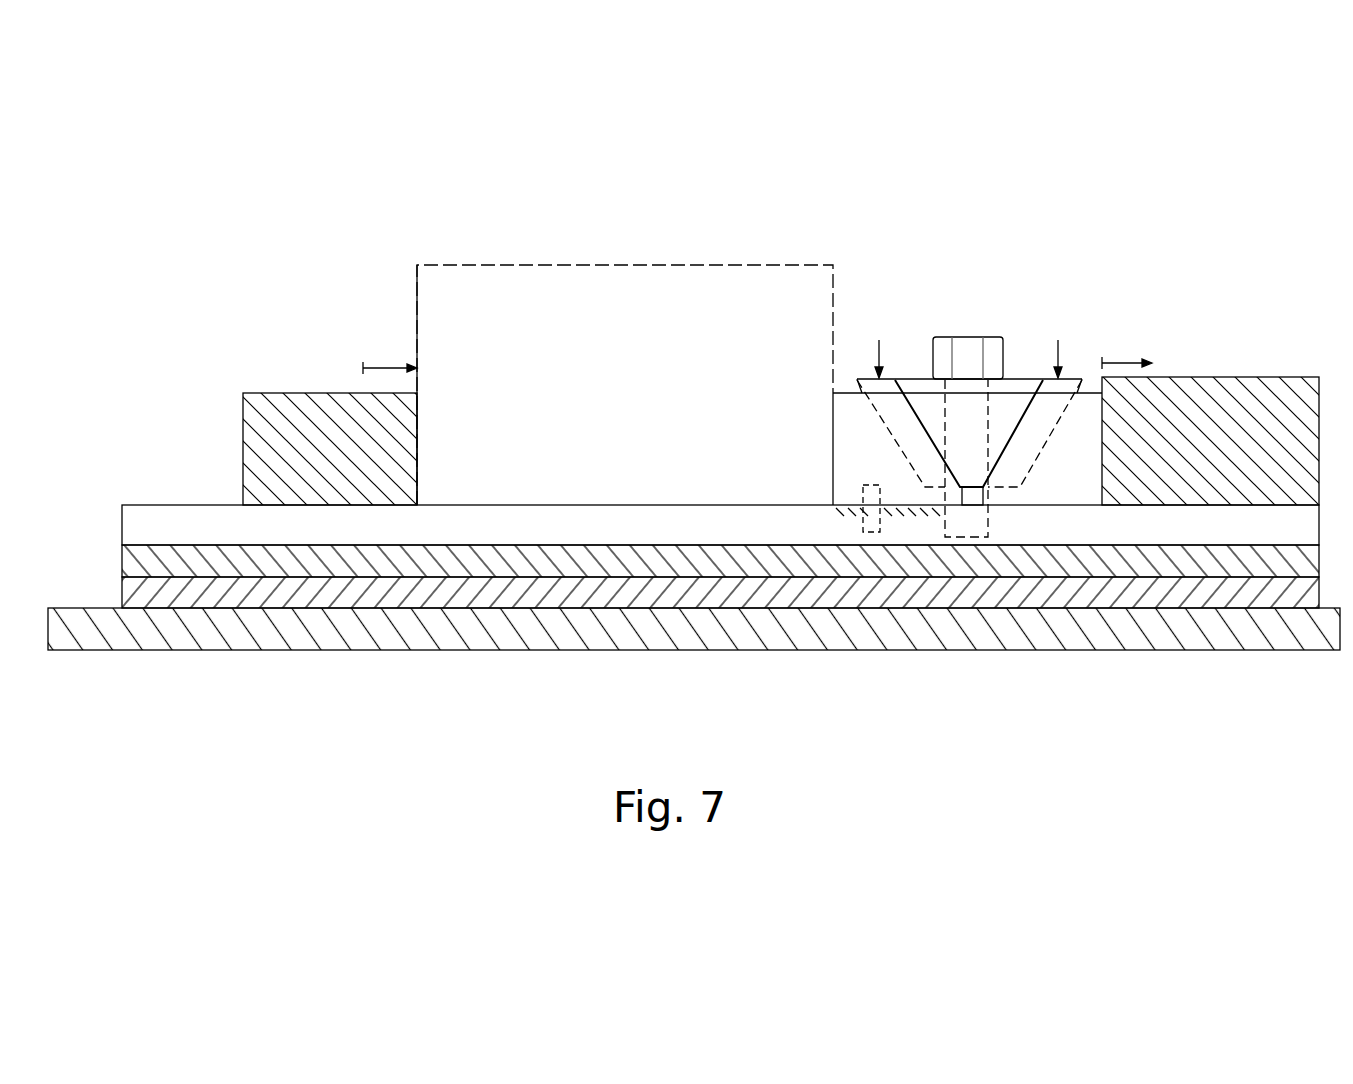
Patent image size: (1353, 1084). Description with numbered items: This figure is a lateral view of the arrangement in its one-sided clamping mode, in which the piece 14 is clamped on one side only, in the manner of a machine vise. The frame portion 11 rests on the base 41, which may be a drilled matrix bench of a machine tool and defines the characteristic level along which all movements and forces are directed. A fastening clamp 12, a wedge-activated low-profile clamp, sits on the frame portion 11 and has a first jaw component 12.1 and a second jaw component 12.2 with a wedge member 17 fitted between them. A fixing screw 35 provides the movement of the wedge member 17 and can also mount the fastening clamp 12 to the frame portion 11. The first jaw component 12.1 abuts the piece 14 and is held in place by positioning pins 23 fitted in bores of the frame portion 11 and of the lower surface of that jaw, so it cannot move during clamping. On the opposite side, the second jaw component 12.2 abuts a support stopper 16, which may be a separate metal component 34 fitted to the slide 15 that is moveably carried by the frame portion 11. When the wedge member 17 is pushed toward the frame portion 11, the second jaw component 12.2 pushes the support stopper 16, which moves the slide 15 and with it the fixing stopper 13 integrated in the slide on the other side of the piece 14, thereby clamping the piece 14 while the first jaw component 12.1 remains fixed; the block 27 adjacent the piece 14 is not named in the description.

The frame portion 11 is at (183, 593).
The fastening clamp 12 is at (1003, 275).
The first jaw component 12.1 is at (843, 482).
The second jaw component 12.2 is at (1032, 482).
The fixing stopper 13 is at (333, 312).
The piece 14 is at (606, 392).
The slide 15 is at (172, 557).
The support stopper 16 is at (1193, 348).
The wedge member 17 is at (1018, 372).
The positioning pins 23 is at (872, 540).
The stop block 27 is at (297, 413).
The separate metal component 34 is at (1250, 415).
The fixing screw 35 is at (965, 340).
The base 41 is at (1057, 635).